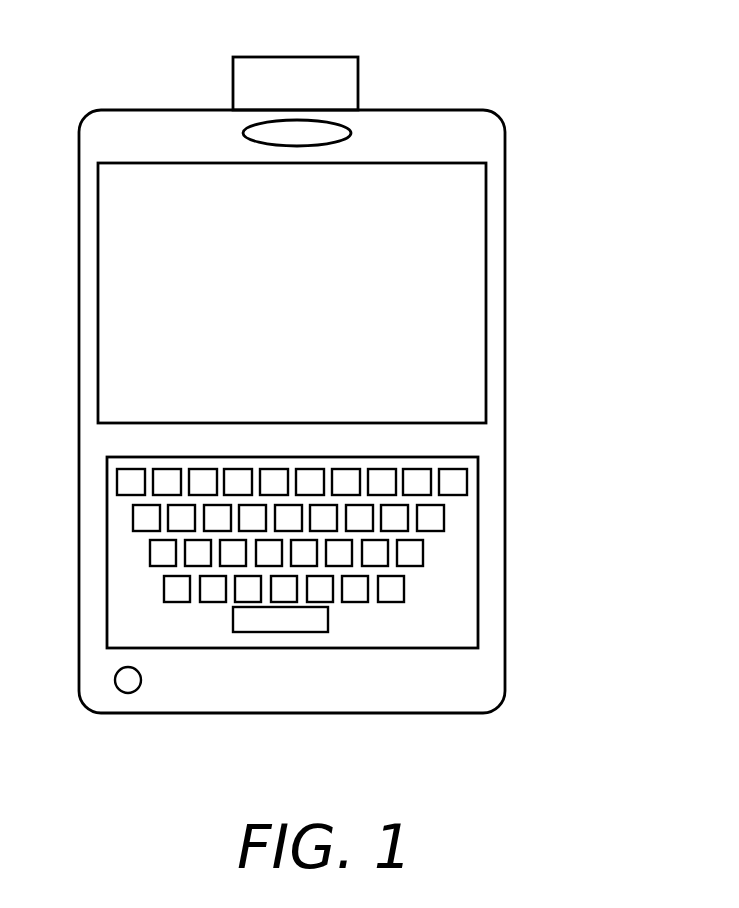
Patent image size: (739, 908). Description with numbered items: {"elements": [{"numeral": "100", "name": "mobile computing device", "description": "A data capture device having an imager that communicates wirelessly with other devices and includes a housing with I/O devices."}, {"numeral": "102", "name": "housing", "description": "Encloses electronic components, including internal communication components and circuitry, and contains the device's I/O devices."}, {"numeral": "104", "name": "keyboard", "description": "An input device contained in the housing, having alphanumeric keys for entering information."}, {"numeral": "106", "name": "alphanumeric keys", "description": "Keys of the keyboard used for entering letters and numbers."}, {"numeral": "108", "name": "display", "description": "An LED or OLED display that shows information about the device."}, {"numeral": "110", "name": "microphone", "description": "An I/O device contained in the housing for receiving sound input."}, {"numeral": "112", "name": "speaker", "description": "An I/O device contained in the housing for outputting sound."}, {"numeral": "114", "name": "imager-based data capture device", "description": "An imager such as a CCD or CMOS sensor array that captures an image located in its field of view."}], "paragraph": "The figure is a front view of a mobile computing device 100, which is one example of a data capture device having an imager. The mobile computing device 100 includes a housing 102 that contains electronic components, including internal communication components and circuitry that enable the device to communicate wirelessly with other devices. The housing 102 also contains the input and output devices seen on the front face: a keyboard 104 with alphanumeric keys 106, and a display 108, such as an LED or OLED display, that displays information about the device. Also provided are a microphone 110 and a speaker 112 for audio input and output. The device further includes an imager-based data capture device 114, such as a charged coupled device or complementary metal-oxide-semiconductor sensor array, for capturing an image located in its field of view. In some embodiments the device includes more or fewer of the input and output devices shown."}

The mobile device 100 is at (131, 66).
The housing 102 is at (505, 253).
The keyboard 104 is at (340, 552).
The key 106 is at (404, 590).
The display 108 is at (311, 313).
The button 110 is at (140, 686).
The speaker 112 is at (342, 141).
The antenna 114 is at (358, 90).